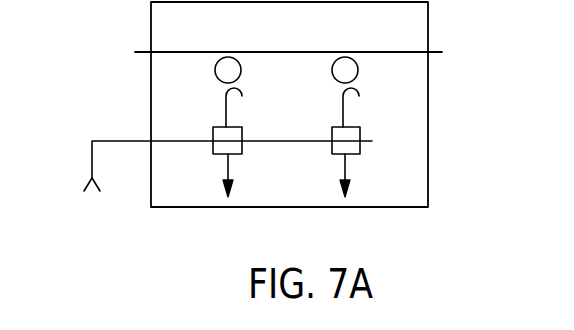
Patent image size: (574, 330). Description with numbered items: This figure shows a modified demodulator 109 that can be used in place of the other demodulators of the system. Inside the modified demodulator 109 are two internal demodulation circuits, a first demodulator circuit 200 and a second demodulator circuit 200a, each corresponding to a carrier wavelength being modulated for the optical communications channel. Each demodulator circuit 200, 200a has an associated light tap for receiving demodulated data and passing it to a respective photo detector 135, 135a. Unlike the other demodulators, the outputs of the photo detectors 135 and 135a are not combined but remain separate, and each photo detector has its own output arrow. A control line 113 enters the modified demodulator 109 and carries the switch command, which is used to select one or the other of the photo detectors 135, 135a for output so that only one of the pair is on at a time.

The modified demodulator 109 is at (429, 101).
The control line 113 is at (92, 158).
The first demodulator circuit 200 is at (228, 67).
The second demodulator circuit 200a is at (345, 67).
The photo detector 135 is at (213, 132).
The photo detector 135a is at (360, 133).